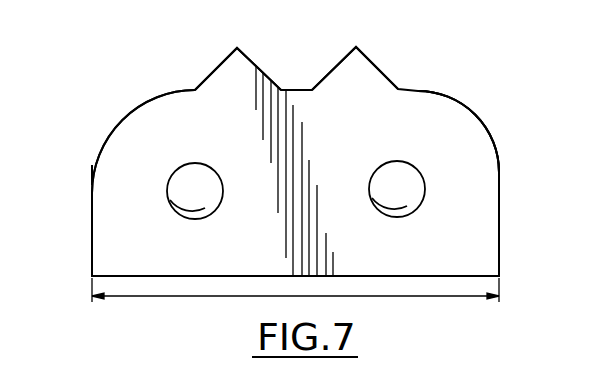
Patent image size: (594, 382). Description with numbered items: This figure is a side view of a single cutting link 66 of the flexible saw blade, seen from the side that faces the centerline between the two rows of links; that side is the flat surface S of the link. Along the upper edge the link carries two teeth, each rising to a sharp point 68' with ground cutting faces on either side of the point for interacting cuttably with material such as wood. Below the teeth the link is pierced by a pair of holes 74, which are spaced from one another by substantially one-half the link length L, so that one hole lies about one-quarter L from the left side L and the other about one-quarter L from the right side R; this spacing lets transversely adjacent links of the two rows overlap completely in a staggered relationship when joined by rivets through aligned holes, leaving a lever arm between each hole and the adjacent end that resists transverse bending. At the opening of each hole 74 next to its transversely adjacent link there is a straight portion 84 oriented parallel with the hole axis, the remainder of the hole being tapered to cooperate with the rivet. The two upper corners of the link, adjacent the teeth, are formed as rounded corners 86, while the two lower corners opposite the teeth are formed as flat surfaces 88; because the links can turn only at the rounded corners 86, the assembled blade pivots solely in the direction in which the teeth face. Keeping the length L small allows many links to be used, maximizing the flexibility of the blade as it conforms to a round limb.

The cutting link 66 is at (493, 142).
The point 68' is at (245, 58).
The hole 74 is at (202, 166).
The straight portion 84 is at (213, 207).
The rounded corner 86 is at (121, 120).
The flat surface 88 is at (92, 234).
The surface S is at (92, 170).
The length L is at (92, 200).
The right side R is at (502, 196).